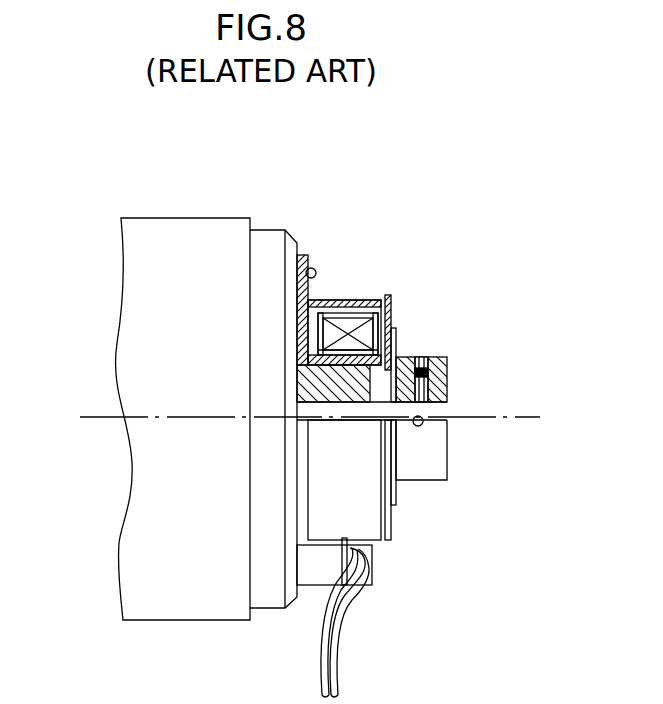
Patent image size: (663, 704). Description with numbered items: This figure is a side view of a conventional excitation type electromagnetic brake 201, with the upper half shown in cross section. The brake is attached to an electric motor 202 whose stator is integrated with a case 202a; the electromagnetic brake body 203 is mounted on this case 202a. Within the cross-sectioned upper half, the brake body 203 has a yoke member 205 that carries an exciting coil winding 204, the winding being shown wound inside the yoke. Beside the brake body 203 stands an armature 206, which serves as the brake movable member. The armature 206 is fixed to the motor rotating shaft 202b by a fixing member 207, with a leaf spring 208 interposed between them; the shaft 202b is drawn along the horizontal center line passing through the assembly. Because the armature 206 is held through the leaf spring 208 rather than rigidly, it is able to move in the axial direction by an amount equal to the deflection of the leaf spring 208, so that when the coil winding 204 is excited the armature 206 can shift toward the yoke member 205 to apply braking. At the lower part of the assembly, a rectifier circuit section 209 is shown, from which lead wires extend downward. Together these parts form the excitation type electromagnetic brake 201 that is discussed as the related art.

The excitation type electromagnetic brake 201 is at (355, 245).
The electric motor 202 is at (195, 216).
The case 202a is at (267, 243).
The motor rotating shaft 202b is at (440, 409).
The electromagnetic brake body 203 is at (352, 300).
The exciting coil winding 204 is at (325, 328).
The yoke member 205 is at (305, 327).
The armature 206 is at (389, 306).
The fixing member 207 is at (437, 460).
The leaf spring 208 is at (395, 341).
The rectifier circuit section 209 is at (372, 567).